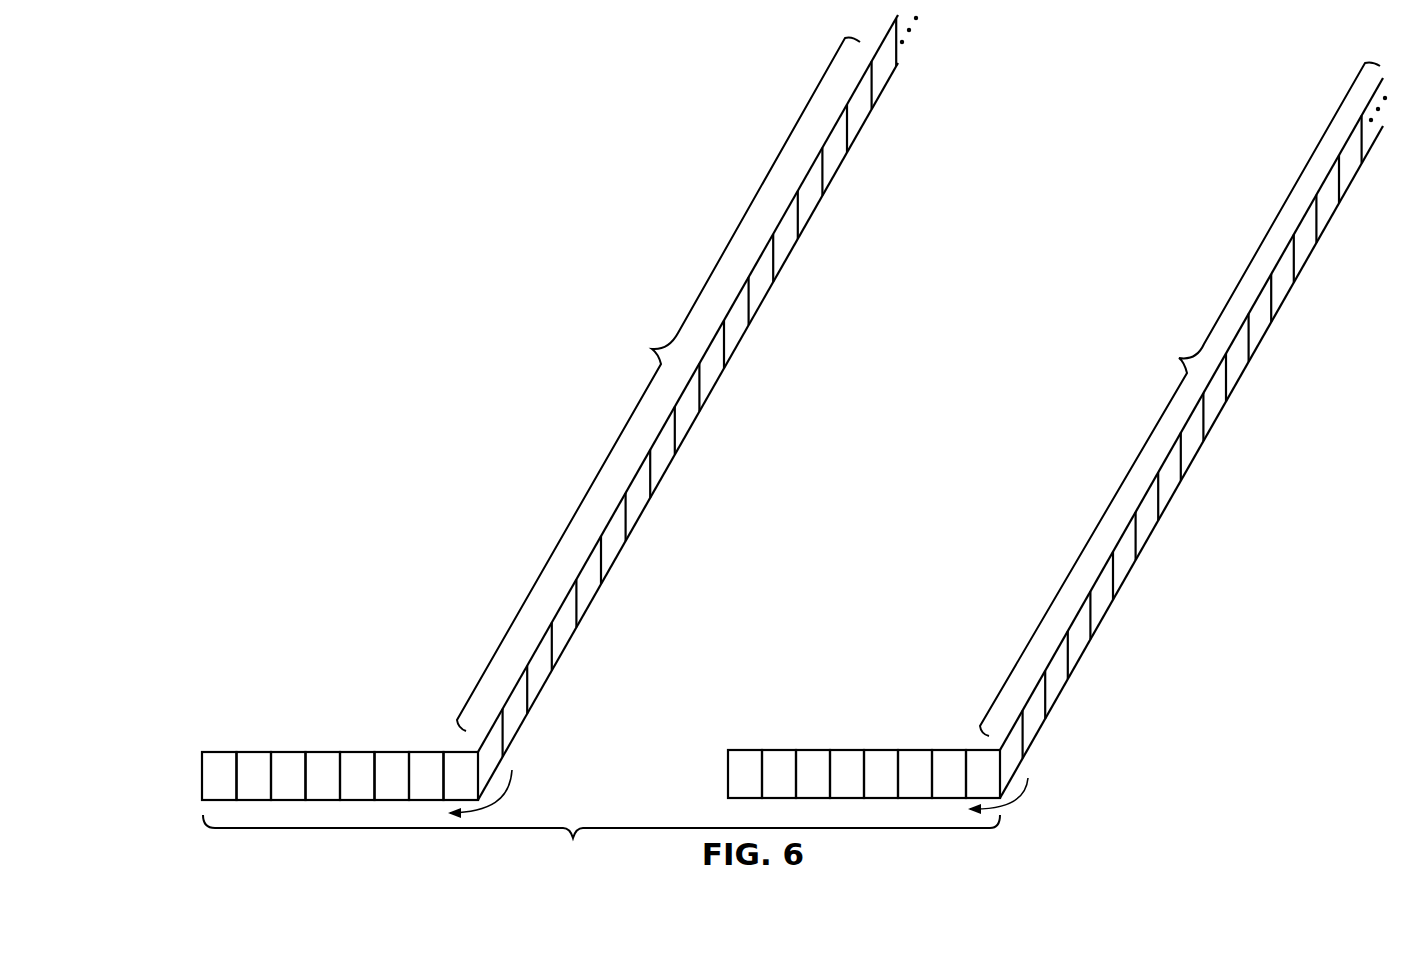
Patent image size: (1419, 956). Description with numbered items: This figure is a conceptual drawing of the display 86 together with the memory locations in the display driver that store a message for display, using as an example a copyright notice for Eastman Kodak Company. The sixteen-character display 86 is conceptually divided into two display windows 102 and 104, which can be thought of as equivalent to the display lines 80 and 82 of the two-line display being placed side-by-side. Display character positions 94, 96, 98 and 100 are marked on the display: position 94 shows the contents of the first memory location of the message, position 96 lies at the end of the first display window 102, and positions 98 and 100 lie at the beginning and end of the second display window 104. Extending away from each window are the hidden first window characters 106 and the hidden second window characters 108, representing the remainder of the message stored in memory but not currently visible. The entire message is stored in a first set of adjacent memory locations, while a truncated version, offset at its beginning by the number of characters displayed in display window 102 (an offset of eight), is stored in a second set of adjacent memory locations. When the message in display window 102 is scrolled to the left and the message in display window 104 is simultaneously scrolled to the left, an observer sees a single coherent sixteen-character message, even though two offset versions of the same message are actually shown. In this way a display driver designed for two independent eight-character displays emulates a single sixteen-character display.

The display line 80 is at (197, 773).
The display line 82 is at (720, 777).
The display 86 is at (601, 844).
The display character position 94 is at (228, 752).
The display character position 96 is at (462, 752).
The display character position 98 is at (740, 748).
The display character position 100 is at (978, 750).
The display window 102 is at (313, 742).
The display window 104 is at (862, 737).
The hidden first window characters 106 is at (687, 407).
The hidden second window characters 108 is at (1183, 430).